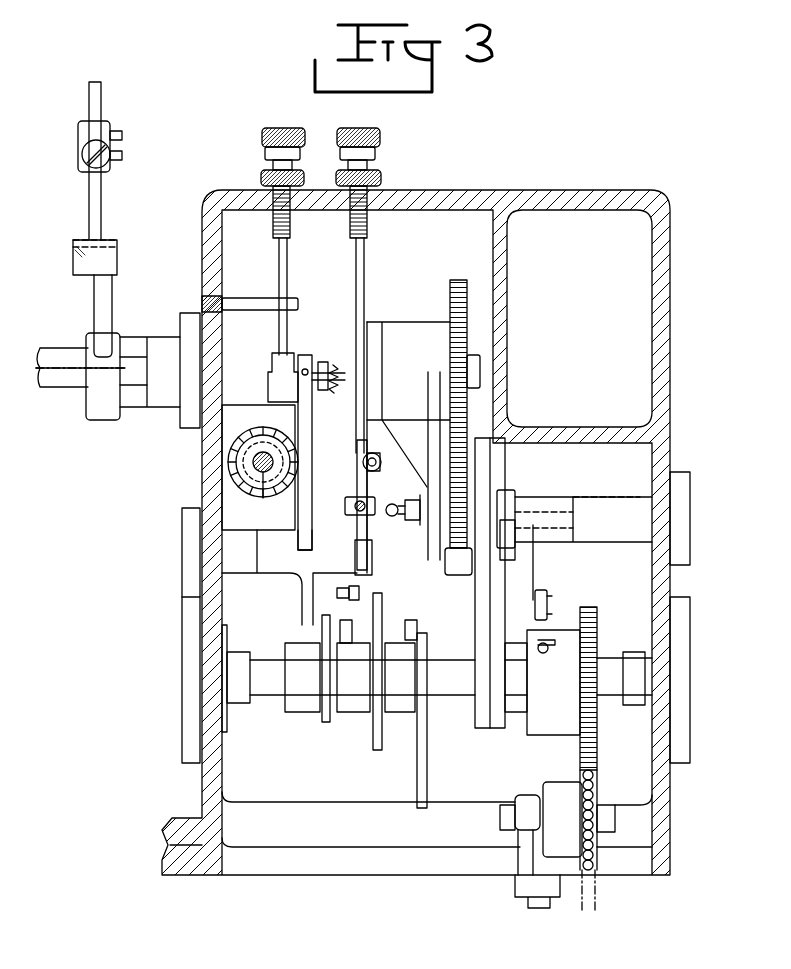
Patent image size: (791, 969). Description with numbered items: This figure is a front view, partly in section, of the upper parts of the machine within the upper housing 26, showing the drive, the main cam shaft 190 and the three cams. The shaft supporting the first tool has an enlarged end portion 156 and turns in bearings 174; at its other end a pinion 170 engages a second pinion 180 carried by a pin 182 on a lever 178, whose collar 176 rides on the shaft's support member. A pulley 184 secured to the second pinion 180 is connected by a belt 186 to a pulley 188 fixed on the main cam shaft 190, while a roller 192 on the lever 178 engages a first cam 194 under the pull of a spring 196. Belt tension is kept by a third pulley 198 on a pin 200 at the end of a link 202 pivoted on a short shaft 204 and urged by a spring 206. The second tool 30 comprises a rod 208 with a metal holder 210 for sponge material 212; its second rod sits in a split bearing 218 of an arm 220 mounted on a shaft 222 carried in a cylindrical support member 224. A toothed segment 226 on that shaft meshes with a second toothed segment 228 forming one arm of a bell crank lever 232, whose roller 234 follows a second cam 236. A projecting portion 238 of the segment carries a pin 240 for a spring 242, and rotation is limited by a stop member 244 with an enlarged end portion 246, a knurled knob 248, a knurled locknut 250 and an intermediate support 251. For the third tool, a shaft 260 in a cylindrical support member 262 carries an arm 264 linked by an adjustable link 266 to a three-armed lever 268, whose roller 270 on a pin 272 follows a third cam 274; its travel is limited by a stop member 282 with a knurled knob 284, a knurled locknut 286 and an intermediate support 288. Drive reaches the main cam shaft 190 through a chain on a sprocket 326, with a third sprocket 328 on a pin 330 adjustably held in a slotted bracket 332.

The upper housing 26 is at (593, 190).
The second tool 30 is at (51, 226).
The end portion 156 is at (84, 388).
The pinion 170 is at (468, 280).
The bearings 174 is at (118, 420).
The collar 176 is at (428, 324).
The lever 178 is at (428, 553).
The second pinion 180 is at (440, 556).
The pin 182 is at (404, 500).
The pulley 184 is at (505, 460).
The belt 186 is at (495, 480).
The pulley 188 is at (475, 718).
The main cam shaft 190 is at (272, 698).
The roller 192 is at (360, 590).
The first cam 194 is at (417, 792).
The spring 196 is at (394, 518).
The third pulley 198 is at (505, 565).
The pin 200 is at (547, 600).
The link 202 is at (530, 575).
The short shaft 204 is at (634, 500).
The spring 206 is at (546, 653).
The rod 208 is at (89, 199).
The metal holder 210 is at (115, 240).
The sponge material 212 is at (75, 267).
The split bearing 218 is at (78, 132).
The arm 220 is at (112, 302).
The shaft 222 is at (128, 356).
The cylindrical support member 224 is at (178, 408).
The toothed segment 226 is at (306, 402).
The second toothed segment 228 is at (298, 512).
The bell crank lever 232 is at (302, 590).
The roller 234 is at (315, 612).
The second cam 236 is at (326, 722).
The projecting portion 238 is at (303, 368).
The pin 240 is at (337, 365).
The spring 242 is at (345, 386).
The stop member 244 is at (287, 270).
The end portion 246 is at (268, 393).
The knurled knob 248 is at (262, 137).
The knurled locknut 250 is at (261, 178).
The intermediate support 251 is at (270, 300).
The shaft 260 is at (266, 498).
The cylindrical support member 262 is at (266, 428).
The arm 264 is at (352, 463).
The link 266 is at (357, 490).
The three-armed lever 268 is at (355, 556).
The roller 270 is at (400, 640).
The pin 272 is at (392, 620).
The third cam 274 is at (380, 750).
The stop member 282 is at (364, 270).
The knurled knob 284 is at (380, 137).
The knurled locknut 286 is at (381, 178).
The intermediate support 288 is at (352, 515).
The sprocket 326 is at (598, 900).
The third sprocket 328 is at (566, 786).
The pin 330 is at (608, 812).
The slotted bracket 332 is at (518, 867).